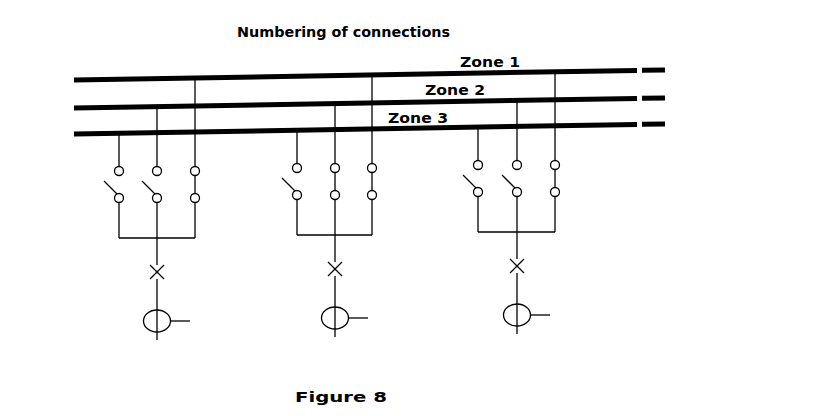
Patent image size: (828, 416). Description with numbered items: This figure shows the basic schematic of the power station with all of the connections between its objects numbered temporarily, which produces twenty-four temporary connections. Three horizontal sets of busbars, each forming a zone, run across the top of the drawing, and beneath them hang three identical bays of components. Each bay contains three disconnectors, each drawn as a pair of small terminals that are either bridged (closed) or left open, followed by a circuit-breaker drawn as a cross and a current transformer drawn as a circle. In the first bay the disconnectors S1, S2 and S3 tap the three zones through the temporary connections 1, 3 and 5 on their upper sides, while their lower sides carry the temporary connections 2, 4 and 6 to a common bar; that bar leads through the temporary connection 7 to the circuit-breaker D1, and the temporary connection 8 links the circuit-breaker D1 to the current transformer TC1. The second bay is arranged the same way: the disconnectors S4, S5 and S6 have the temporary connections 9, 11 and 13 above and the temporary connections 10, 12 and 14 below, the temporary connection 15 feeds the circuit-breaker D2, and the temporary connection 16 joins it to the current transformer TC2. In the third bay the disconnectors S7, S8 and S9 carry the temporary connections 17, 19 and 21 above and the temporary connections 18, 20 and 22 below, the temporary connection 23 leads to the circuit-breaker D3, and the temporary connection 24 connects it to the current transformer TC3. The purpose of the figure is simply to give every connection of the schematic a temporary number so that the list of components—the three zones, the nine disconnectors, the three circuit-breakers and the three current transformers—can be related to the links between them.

The temporary connection 1 is at (114, 154).
The temporary connection 2 is at (114, 216).
The temporary connection 3 is at (152, 141).
The temporary connection 4 is at (152, 216).
The temporary connection 5 is at (190, 127).
The temporary connection 6 is at (191, 216).
The temporary connection 7 is at (150, 251).
The temporary connection 8 is at (150, 294).
The temporary connection 9 is at (292, 151).
The temporary connection 10 is at (288, 213).
The temporary connection 11 is at (326, 138).
The temporary connection 12 is at (326, 213).
The temporary connection 13 is at (364, 124).
The temporary connection 14 is at (364, 213).
The temporary connection 15 is at (324, 248).
The temporary connection 16 is at (324, 291).
The temporary connection 17 is at (469, 148).
The temporary connection 18 is at (469, 210).
The temporary connection 19 is at (508, 135).
The temporary connection 20 is at (508, 210).
The temporary connection 21 is at (546, 121).
The temporary connection 22 is at (547, 210).
The temporary connection 23 is at (505, 245).
The temporary connection 24 is at (506, 288).
The disconnector S1 is at (100, 187).
The disconnector S2 is at (138, 187).
The disconnector S3 is at (182, 186).
The disconnector S4 is at (278, 184).
The disconnector S5 is at (322, 183).
The disconnector S6 is at (359, 183).
The disconnector S7 is at (459, 181).
The disconnector S8 is at (498, 181).
The disconnector S9 is at (542, 180).
The circuit-breaker D1 is at (143, 273).
The circuit-breaker D2 is at (321, 270).
The circuit-breaker D3 is at (503, 267).
The current transformer TC1 is at (150, 325).
The current transformer TC2 is at (328, 322).
The current transformer TC3 is at (510, 319).